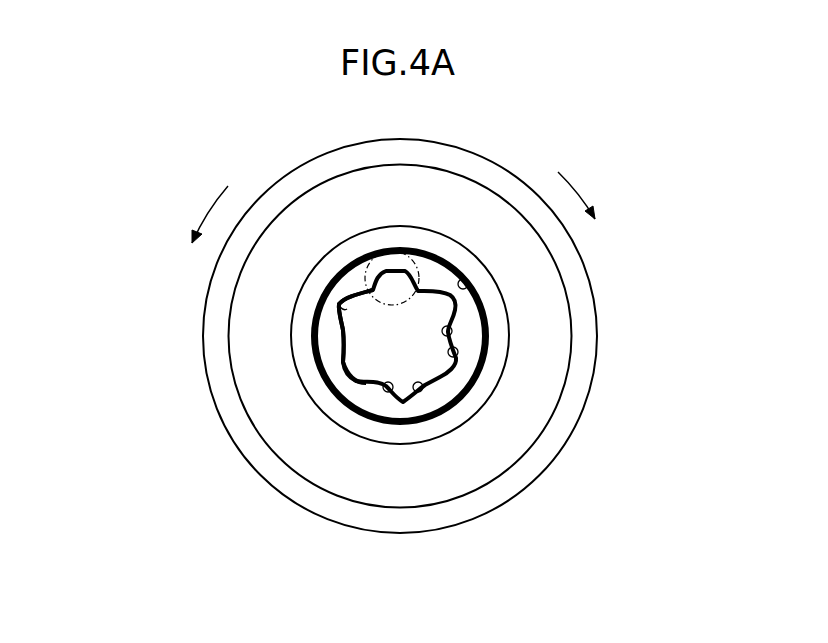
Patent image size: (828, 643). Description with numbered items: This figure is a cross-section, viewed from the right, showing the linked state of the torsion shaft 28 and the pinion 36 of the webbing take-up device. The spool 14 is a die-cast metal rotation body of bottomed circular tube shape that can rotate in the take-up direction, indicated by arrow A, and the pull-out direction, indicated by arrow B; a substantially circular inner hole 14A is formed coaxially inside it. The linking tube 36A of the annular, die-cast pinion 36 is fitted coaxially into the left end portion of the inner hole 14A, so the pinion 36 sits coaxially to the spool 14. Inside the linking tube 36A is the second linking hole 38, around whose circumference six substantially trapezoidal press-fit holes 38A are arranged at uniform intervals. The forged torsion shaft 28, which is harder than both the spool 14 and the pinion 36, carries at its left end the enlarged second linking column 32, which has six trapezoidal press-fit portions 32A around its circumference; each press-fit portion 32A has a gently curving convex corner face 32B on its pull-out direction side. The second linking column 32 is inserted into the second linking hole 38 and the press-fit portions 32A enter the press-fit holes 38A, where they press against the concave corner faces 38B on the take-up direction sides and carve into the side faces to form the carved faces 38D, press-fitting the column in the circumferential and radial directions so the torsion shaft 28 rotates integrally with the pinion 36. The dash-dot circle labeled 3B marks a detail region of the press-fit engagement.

The spool 14 is at (210, 277).
The inner hole 14A is at (464, 285).
The pinion 36 is at (381, 322).
The linking tube 36A is at (350, 275).
The second linking hole 38 is at (450, 333).
The press-fit hole 38A is at (458, 352).
The corner face 38B is at (422, 385).
The carved face 38D is at (380, 388).
The torsion shaft 28 is at (267, 336).
The second linking column 32 is at (340, 341).
The press-fit portion 32A is at (340, 306).
The corner face 32B is at (340, 359).
The detail region of FIG. 3B is at (413, 263).
The take-up direction A is at (212, 205).
The pull-out direction B is at (573, 183).